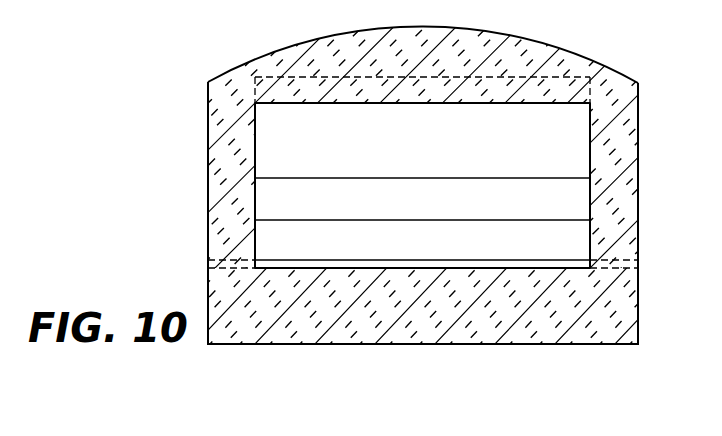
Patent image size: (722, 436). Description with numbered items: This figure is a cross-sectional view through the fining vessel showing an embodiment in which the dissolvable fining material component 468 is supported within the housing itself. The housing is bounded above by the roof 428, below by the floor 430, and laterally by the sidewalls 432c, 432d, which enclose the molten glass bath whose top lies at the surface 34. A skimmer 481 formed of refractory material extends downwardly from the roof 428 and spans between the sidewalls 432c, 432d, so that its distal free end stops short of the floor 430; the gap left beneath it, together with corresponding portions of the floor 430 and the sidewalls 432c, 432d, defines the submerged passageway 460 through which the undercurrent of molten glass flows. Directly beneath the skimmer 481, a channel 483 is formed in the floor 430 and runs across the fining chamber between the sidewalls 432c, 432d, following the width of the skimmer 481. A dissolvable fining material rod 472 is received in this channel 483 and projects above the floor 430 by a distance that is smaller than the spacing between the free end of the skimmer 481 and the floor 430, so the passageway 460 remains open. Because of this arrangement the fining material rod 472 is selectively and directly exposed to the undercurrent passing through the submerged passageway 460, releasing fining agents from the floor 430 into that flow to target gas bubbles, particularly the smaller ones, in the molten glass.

The roof 428 is at (506, 48).
The floor 430 is at (407, 328).
The lateral sidewall 432c is at (228, 151).
The lateral sidewall 432d is at (624, 172).
The surface of the molten glass bath 34 is at (407, 177).
The submerged passageway 460 is at (256, 247).
The dissolvable fining material rod 472 is at (400, 265).
The skimmer 481 is at (568, 142).
The dissolvable fining material component 468 is at (541, 258).
The channel 483 is at (626, 261).